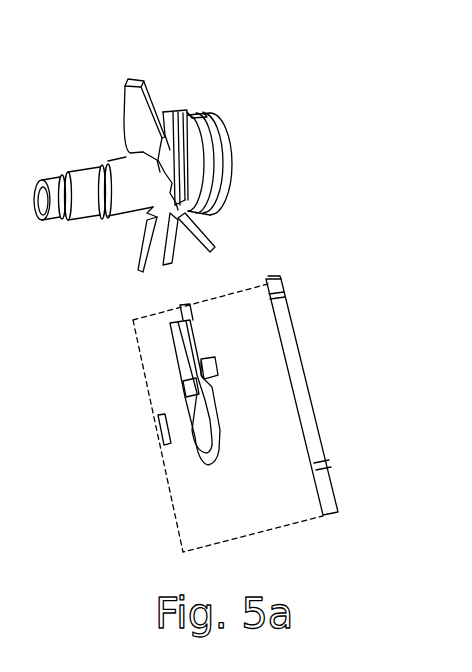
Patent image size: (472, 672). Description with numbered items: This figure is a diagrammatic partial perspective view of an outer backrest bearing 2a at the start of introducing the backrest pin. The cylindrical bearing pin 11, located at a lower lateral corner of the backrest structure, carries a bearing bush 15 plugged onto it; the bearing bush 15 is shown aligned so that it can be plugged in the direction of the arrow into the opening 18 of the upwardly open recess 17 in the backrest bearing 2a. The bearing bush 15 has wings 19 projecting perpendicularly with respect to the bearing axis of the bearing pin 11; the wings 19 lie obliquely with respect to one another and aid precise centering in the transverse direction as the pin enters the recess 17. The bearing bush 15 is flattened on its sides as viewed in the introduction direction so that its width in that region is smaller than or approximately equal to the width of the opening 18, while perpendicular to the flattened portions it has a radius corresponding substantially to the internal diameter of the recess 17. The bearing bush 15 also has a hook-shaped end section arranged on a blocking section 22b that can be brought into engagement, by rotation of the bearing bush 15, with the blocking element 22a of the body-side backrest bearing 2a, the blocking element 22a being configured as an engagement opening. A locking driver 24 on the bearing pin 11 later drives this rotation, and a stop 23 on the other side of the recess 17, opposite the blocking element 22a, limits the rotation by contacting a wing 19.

The bearing pin 11 is at (62, 205).
The blocking section 22b is at (130, 81).
The bearing bush 15 is at (142, 140).
The locking driver 24 is at (212, 168).
The wings 19 is at (210, 252).
The outer backrest bearing 2a is at (248, 507).
The recess 17 is at (208, 443).
The opening 18 is at (197, 378).
The stop 23 is at (218, 362).
The blocking element 22a is at (158, 435).